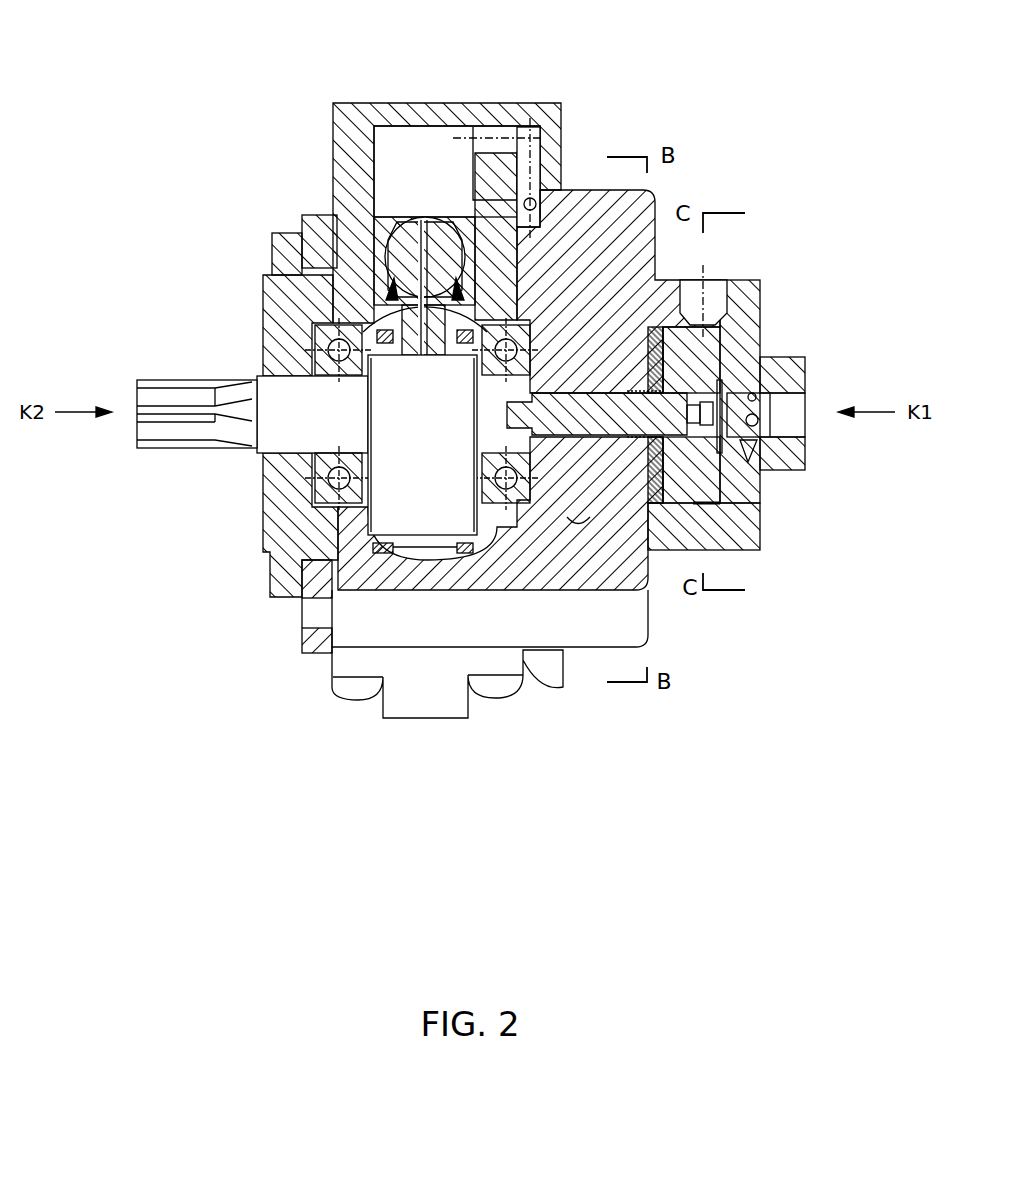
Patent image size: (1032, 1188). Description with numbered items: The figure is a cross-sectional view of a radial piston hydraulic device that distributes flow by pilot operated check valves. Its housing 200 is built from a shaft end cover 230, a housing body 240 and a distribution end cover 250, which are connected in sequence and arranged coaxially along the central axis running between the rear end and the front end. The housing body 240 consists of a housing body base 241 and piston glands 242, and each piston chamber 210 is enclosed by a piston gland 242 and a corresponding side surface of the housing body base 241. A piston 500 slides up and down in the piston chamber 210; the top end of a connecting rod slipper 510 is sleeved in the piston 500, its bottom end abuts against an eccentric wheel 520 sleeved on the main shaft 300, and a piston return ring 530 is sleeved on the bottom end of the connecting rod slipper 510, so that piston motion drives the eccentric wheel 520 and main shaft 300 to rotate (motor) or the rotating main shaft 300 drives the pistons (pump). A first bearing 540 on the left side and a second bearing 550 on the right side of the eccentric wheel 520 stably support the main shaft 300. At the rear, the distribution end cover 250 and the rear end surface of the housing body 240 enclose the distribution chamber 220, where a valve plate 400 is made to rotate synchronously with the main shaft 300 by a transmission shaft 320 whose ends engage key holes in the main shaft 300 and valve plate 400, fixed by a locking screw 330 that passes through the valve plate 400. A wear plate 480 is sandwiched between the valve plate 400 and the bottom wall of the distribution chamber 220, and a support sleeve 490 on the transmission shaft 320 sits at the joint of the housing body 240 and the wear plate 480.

The housing 200 is at (273, 594).
The piston chamber 210 is at (393, 173).
The distribution chamber 220 is at (723, 505).
The shaft end cover 230 is at (277, 525).
The housing body 240 is at (605, 552).
The housing body base 241 is at (283, 243).
The piston gland 242 is at (352, 110).
The distribution end cover 250 is at (750, 552).
The main shaft 300 is at (192, 385).
The transmission shaft 320 is at (617, 432).
The locking screw 330 is at (707, 403).
The valve plate 400 is at (707, 343).
The wear plate 480 is at (663, 377).
The support sleeve 490 is at (660, 447).
The piston 500 is at (375, 222).
The connecting rod slipper 510 is at (447, 262).
The eccentric wheel 520 is at (387, 513).
The piston return ring 530 is at (463, 557).
The first bearing 540 is at (318, 466).
The second bearing 550 is at (523, 507).